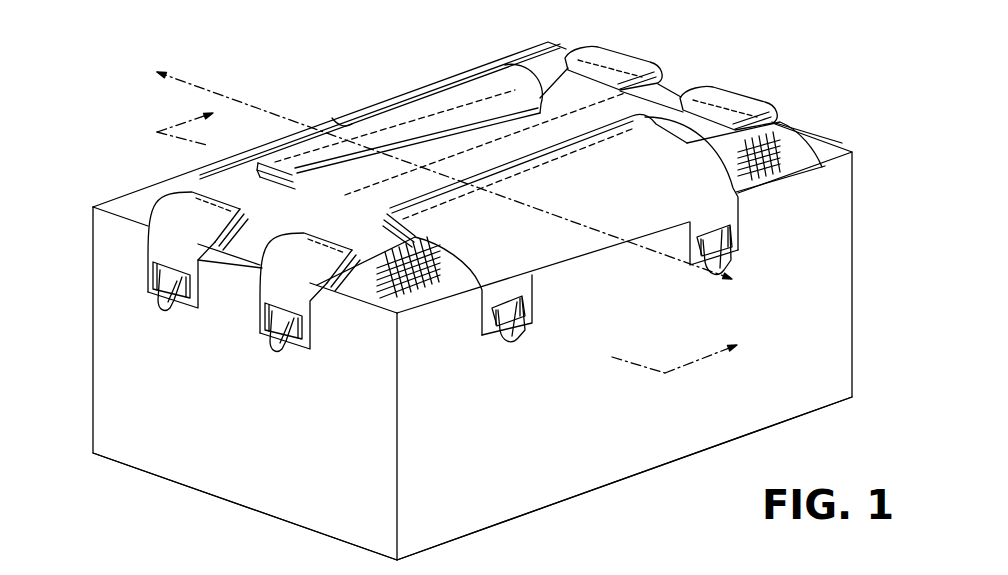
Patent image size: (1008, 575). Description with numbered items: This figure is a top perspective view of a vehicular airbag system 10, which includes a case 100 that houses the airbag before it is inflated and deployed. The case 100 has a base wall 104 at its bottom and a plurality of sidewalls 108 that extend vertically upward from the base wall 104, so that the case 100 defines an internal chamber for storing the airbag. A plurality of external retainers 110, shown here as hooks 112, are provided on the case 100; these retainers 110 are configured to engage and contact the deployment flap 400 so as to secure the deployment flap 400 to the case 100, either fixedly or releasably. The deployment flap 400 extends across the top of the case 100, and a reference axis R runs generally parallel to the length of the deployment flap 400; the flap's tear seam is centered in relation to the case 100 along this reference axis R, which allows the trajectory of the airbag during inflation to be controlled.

The vehicular airbag system 10 is at (826, 66).
The case 100 is at (73, 396).
The base wall 104 is at (517, 519).
The sidewalls 108 is at (140, 189).
The retainers 110 is at (258, 350).
The hooks 112 is at (155, 304).
The deployment flap 400 is at (470, 146).
The reference axis R is at (332, 118).